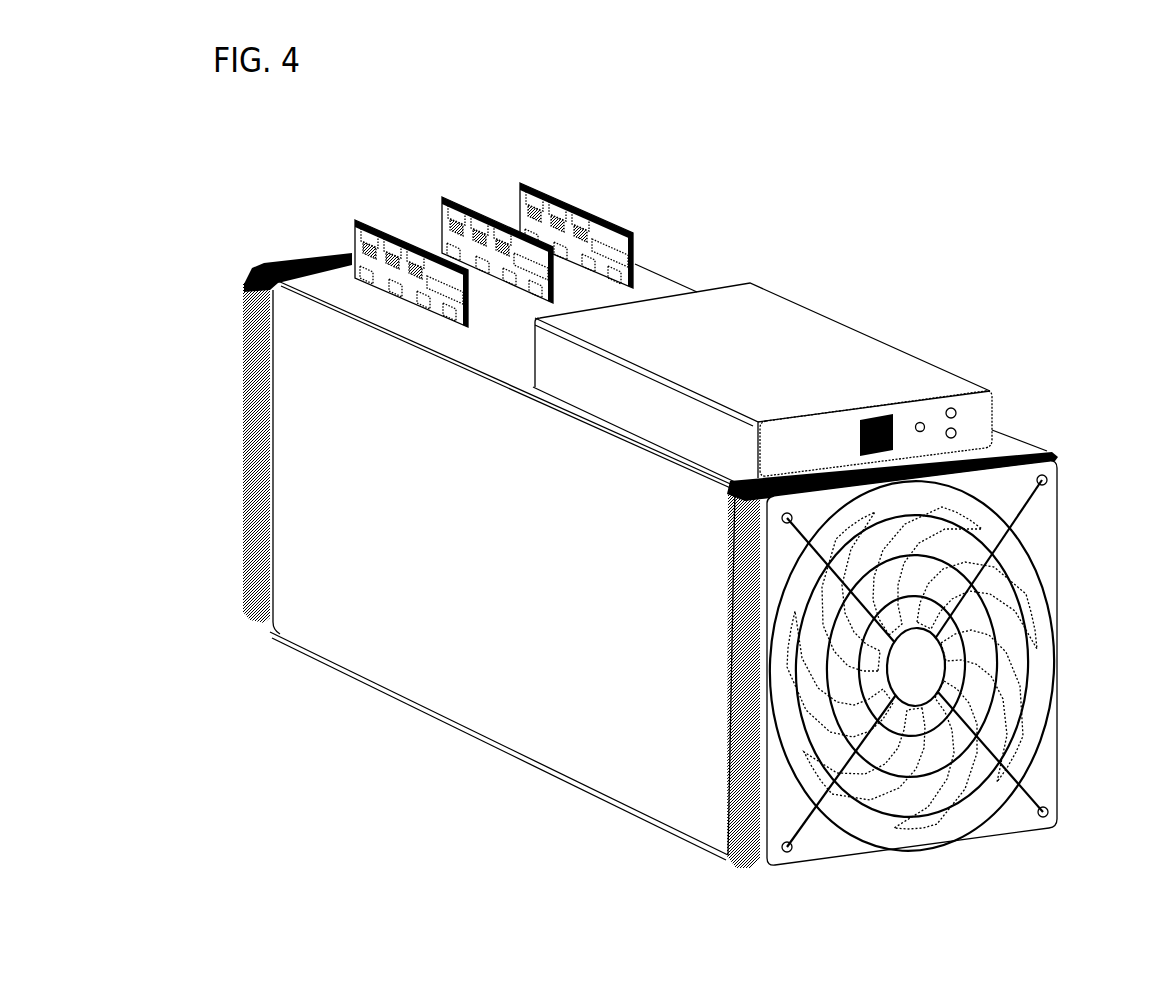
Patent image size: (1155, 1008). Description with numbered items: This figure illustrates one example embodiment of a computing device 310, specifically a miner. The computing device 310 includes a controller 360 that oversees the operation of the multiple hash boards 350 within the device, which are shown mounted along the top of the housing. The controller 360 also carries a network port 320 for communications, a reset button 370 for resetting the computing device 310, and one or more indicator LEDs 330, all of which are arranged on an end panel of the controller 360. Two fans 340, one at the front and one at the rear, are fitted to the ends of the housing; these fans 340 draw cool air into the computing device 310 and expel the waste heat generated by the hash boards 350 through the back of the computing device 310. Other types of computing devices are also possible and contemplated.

The computing device 310 is at (933, 235).
The network port 320 is at (862, 418).
The indicator LEDs 330 is at (953, 407).
The fans 340 is at (250, 272).
The hash boards 350 is at (356, 218).
The controller 360 is at (767, 287).
The reset button 370 is at (919, 420).